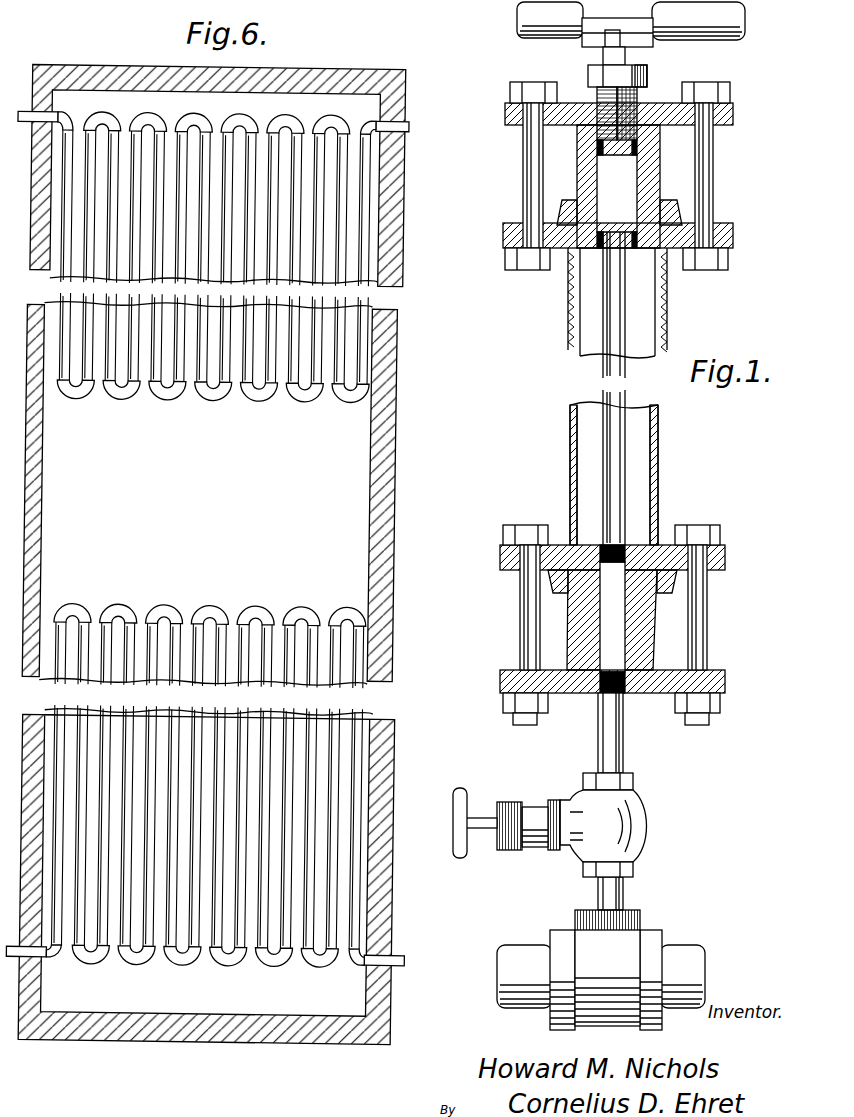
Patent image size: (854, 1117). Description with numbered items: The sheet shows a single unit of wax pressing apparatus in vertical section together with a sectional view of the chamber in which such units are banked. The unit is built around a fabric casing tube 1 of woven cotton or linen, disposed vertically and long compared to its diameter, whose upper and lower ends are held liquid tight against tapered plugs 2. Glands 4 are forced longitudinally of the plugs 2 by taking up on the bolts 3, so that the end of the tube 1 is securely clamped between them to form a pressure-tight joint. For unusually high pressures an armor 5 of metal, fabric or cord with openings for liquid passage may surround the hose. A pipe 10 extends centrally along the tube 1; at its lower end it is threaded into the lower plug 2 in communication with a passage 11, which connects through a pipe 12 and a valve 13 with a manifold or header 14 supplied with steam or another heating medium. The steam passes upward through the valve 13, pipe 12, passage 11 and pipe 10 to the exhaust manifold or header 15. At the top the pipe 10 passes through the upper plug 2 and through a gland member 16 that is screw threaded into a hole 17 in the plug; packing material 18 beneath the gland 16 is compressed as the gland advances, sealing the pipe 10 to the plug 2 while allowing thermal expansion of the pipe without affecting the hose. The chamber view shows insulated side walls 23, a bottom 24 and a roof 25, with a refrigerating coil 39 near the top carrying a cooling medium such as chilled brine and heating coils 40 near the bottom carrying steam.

In FIG. 1, the fabric casing tube 1 is at (572, 347).
In FIG. 1, the tapered plug 2 is at (660, 162).
In FIG. 1, the bolt 3 is at (528, 182).
In FIG. 1, the gland 4 is at (680, 212).
In FIG. 1, the armor 5 is at (667, 305).
In FIG. 1, the pipe 10 is at (605, 63).
In FIG. 1, the passage 11 is at (603, 628).
In FIG. 1, the pipe 12 is at (598, 740).
In FIG. 1, the valve 13 is at (537, 815).
In FIG. 1, the manifold or header 14 is at (685, 958).
In FIG. 1, the exhaust manifold or header 15 is at (723, 38).
In FIG. 1, the gland member 16 is at (597, 96).
In FIG. 1, the hole 17 is at (655, 103).
In FIG. 1, the packing material 18 is at (577, 152).
In FIG. 6, the side walls 23 is at (398, 435).
In FIG. 6, the bottom 24 is at (234, 1020).
In FIG. 6, the roof 25 is at (308, 66).
In FIG. 6, the refrigerating coil 39 is at (365, 220).
In FIG. 6, the heating coils 40 is at (70, 707).